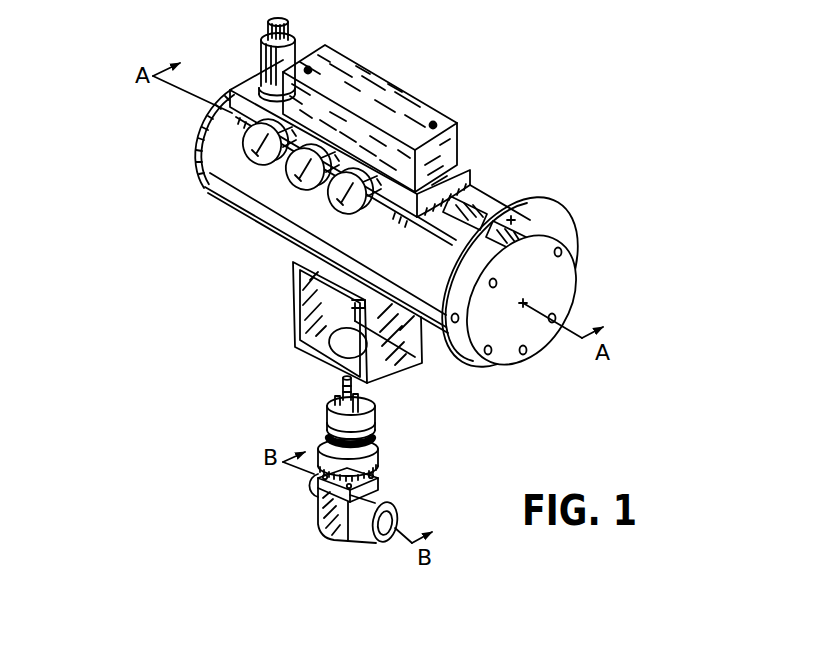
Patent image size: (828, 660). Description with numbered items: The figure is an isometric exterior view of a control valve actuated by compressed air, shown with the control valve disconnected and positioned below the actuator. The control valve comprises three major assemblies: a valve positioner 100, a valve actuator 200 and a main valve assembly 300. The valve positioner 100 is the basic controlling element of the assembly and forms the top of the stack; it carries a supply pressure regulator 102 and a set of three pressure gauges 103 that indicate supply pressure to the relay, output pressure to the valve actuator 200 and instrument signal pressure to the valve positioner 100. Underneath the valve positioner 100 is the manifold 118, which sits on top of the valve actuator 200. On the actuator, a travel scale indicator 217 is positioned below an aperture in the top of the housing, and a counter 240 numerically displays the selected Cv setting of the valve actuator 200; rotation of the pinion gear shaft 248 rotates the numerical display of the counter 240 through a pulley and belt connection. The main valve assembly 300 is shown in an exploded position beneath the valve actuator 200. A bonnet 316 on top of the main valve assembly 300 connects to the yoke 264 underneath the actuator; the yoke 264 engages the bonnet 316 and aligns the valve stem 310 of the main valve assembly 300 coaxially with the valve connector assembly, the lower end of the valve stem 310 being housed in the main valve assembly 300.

The valve positioner 100 is at (372, 59).
The supply pressure regulator 102 is at (264, 32).
The pressure gauges 103 is at (245, 134).
The manifold 118 is at (472, 178).
The valve actuator 200 is at (243, 227).
The travel scale indicator 217 is at (487, 214).
The counter 240 is at (529, 224).
The pinion gear shaft 248 is at (455, 323).
The yoke 264 is at (295, 311).
The main valve assembly 300 is at (306, 508).
The valve stem 310 is at (343, 392).
The bonnet 316 is at (379, 444).